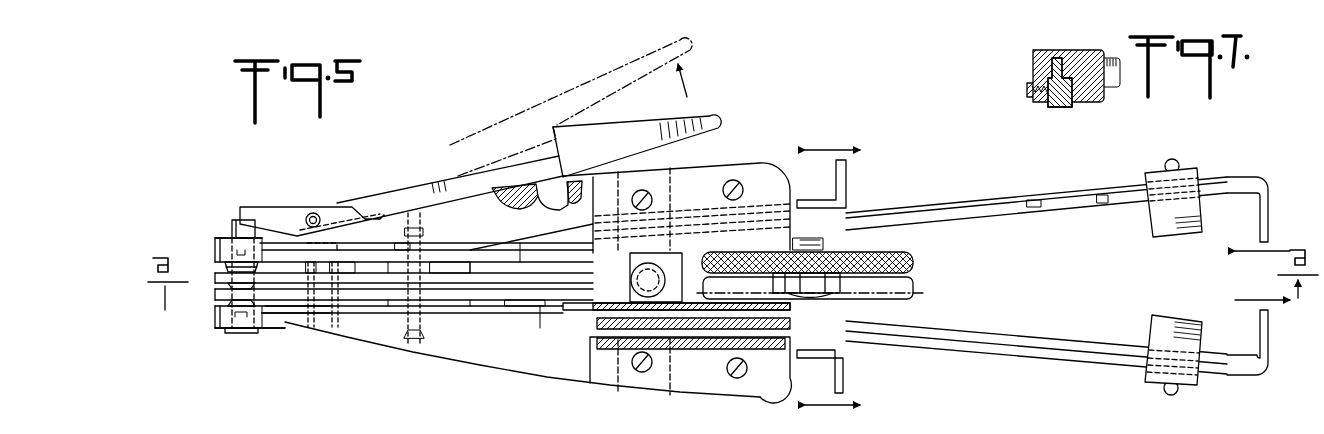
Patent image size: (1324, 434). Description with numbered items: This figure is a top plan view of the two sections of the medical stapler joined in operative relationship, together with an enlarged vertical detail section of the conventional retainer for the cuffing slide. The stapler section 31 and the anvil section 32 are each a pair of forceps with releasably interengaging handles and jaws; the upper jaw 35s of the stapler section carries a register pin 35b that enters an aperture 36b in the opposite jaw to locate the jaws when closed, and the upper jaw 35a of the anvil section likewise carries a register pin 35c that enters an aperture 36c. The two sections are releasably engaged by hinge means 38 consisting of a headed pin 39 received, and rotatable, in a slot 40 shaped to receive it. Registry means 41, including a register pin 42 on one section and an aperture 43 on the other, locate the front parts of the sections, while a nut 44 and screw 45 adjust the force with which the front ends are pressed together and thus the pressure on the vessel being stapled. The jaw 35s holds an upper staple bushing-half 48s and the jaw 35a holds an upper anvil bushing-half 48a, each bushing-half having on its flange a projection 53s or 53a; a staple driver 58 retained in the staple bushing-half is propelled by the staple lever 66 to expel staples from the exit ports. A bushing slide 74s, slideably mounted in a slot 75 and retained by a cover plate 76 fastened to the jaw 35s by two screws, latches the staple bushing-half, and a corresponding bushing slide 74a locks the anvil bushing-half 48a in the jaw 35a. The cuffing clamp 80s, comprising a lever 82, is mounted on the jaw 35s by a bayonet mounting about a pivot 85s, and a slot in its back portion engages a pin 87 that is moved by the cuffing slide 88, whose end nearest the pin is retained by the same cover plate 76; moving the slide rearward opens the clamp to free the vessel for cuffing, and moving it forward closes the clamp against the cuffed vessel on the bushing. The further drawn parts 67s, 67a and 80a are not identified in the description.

In FIG. 5, the stapler section 31 is at (777, 162).
In FIG. 5, the anvil section 32 is at (725, 382).
In FIG. 5, the upper jaw of anvil section 35a is at (260, 330).
In FIG. 5, the register pin 35b is at (280, 245).
In FIG. 5, the register pin 35c is at (277, 322).
In FIG. 5, the upper jaw of stapler section 35s is at (215, 247).
In FIG. 5, the aperture 36b is at (280, 247).
In FIG. 5, the aperture 36c is at (290, 327).
In FIG. 5, the hinge means 38 is at (683, 284).
In FIG. 5, the headed pin 39 is at (675, 257).
In FIG. 5, the slot 40 is at (635, 272).
In FIG. 5, the registry means 41 is at (335, 300).
In FIG. 5, the register pin 42 is at (337, 285).
In FIG. 5, the aperture 43 is at (355, 283).
In FIG. 5, the nut 44 is at (920, 280).
In FIG. 5, the screw 45 is at (845, 218).
In FIG. 5, the upper anvil bushing-half 48a is at (260, 323).
In FIG. 5, the upper staple bushing-half 48s is at (243, 250).
In FIG. 5, the projection 53a is at (240, 318).
In FIG. 5, the projection 53s is at (240, 250).
In FIG. 5, the staple driver 58 is at (240, 220).
In FIG. 5, the staple lever 66 is at (575, 77).
In FIG. 5, the lower blade 67a is at (458, 310).
In FIG. 5, the upper blade 67s is at (500, 247).
In FIG. 5, the bushing slide 74a is at (585, 335).
In FIG. 5, the bushing slide 74s is at (503, 190).
In FIG. 5, the slot 75 is at (383, 247).
In FIG. 5, the cover plate 76 is at (727, 173).
In FIG. 5, the lower spring 80a is at (216, 308).
In FIG. 5, the cuffing clamp 80s is at (218, 287).
In FIG. 5, the lever 82 is at (457, 267).
In FIG. 5, the pivot 85s is at (402, 247).
In FIG. 5, the pin 87 is at (518, 283).
In FIG. 5, the cuffing slide 88 is at (1107, 197).
In FIG. 7, the cuffing slide 88 is at (1056, 63).